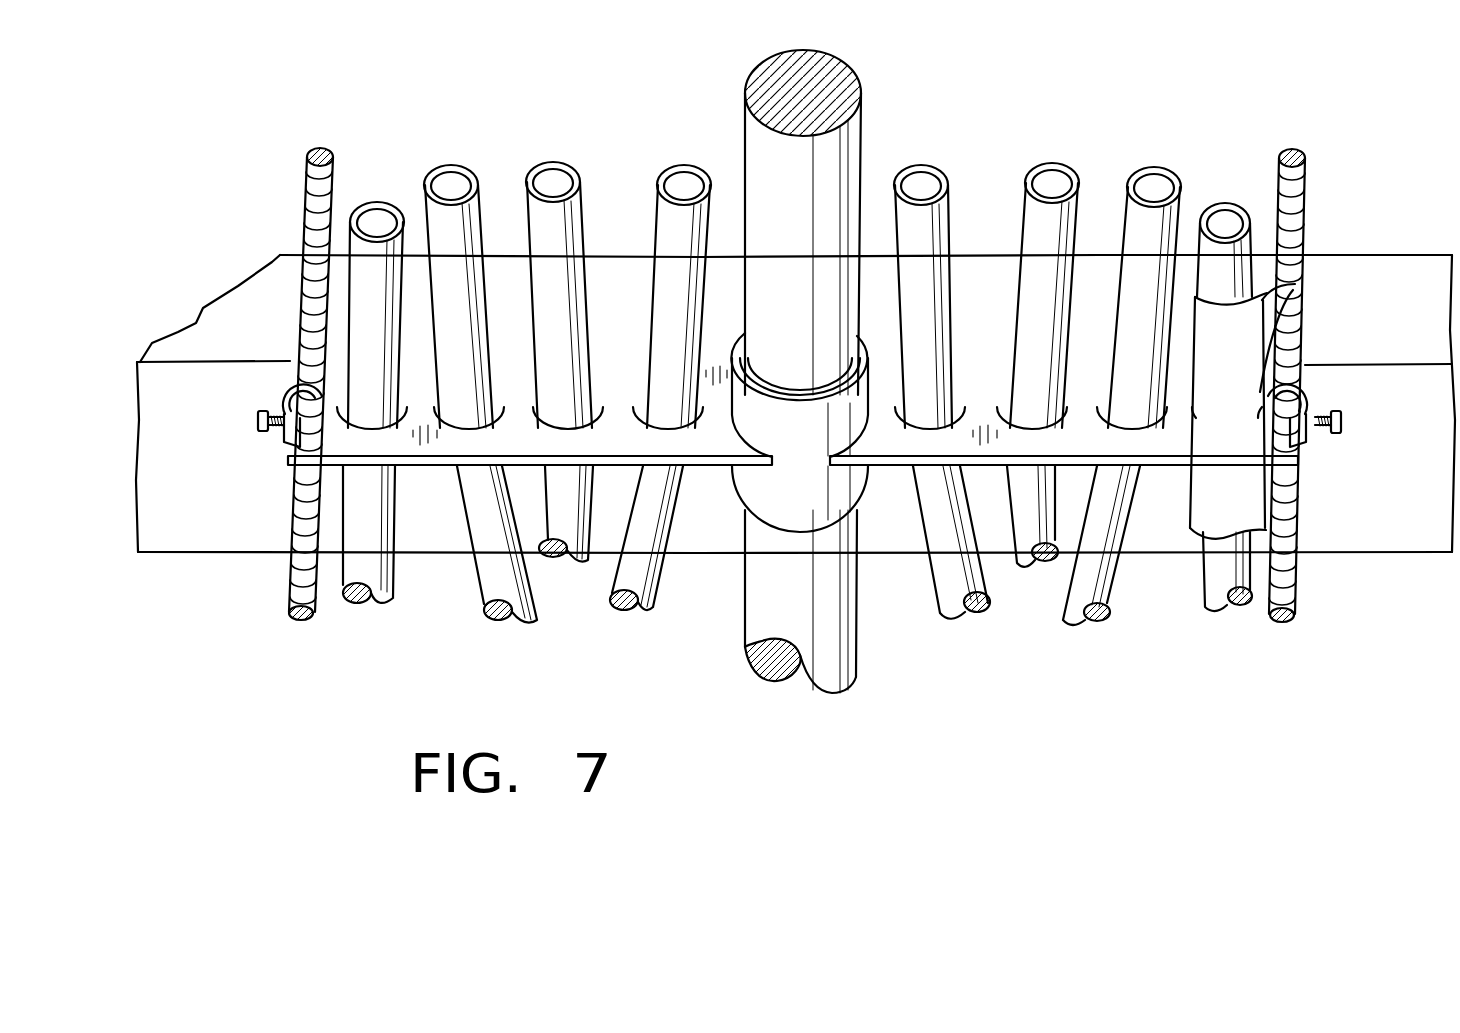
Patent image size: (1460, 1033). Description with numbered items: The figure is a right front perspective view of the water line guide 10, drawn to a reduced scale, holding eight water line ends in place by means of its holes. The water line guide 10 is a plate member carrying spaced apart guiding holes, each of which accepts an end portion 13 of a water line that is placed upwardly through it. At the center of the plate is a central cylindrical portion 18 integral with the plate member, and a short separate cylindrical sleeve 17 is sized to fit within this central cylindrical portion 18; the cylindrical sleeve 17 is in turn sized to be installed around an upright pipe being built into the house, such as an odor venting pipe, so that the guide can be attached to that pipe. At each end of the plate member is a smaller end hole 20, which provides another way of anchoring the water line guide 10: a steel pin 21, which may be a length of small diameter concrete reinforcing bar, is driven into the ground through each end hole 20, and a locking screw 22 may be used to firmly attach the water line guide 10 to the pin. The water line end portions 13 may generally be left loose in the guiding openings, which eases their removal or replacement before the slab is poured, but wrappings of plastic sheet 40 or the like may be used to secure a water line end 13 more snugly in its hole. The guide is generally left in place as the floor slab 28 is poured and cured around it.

The water line guide 10 is at (1090, 318).
The end portion of a water line 13 is at (363, 218).
The cylindrical sleeve 17 is at (772, 335).
The central cylindrical portion 18 is at (778, 498).
The end hole 20 is at (285, 393).
The steel pin 21 is at (296, 615).
The locking screw 22 is at (257, 419).
The floor slab 28 is at (1318, 527).
The plastic sheet wrapping 40 is at (1200, 510).